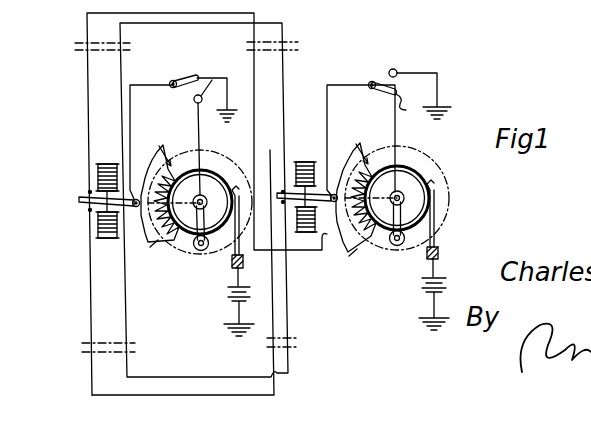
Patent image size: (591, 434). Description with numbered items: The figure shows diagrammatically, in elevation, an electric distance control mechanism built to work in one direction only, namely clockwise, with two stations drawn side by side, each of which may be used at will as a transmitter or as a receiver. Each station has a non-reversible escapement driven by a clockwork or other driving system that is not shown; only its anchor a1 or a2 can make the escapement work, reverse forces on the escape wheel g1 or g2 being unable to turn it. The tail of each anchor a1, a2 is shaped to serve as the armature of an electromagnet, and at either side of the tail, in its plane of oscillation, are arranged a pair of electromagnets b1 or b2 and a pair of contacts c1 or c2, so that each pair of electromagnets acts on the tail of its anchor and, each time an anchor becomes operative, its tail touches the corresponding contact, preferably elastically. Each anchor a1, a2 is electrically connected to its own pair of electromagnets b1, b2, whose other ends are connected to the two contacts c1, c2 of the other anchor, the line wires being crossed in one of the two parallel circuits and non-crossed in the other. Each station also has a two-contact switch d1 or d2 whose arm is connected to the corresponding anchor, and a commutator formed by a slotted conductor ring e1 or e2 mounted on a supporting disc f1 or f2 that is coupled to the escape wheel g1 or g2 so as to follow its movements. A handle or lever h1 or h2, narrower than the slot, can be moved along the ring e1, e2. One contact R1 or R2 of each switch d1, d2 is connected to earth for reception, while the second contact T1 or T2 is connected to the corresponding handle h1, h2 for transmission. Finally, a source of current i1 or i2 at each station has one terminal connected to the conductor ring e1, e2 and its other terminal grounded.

The anchor a1 is at (327, 130).
The anchor a2 is at (150, 242).
The electromagnet b1 is at (301, 161).
The electromagnet b2 is at (88, 192).
The contact c1 is at (270, 154).
The contact c2 is at (88, 210).
The two-contact switch d1 is at (377, 80).
The two-contact switch d2 is at (173, 80).
The conductor ring e1 is at (432, 168).
The conductor ring e2 is at (180, 150).
The supporting disc f1 is at (428, 164).
The supporting disc f2 is at (195, 168).
The escape wheel g1 is at (385, 248).
The escape wheel g2 is at (176, 250).
The handle or lever h1 is at (405, 250).
The handle or lever h2 is at (211, 248).
The source of current i1 is at (449, 268).
The source of current i2 is at (248, 290).
The contact R1 is at (398, 68).
The contact R2 is at (197, 76).
The contact T1 is at (411, 120).
The contact T2 is at (219, 85).